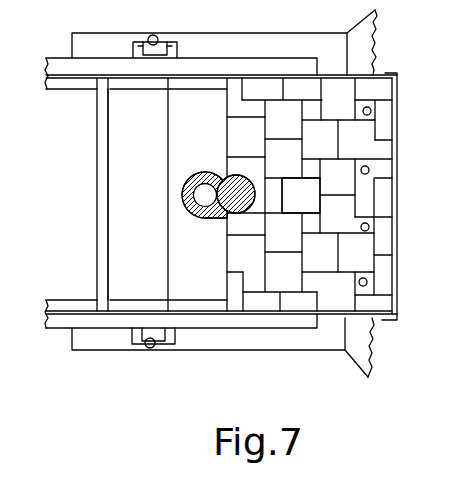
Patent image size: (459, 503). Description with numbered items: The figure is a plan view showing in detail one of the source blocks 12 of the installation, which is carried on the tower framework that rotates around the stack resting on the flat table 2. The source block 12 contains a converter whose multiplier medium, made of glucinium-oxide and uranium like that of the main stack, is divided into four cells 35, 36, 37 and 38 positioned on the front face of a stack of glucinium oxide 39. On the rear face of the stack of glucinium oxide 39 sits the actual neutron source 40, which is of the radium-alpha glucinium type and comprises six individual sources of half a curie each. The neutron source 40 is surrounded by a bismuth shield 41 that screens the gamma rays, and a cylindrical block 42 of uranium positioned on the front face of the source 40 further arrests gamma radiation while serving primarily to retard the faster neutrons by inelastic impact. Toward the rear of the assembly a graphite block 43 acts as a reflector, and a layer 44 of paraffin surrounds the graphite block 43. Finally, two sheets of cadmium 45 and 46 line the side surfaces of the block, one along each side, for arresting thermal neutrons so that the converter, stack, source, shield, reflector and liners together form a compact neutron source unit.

The flat table 2 is at (368, 44).
The source block 12 is at (95, 151).
The cell 35 is at (362, 108).
The cell 36 is at (361, 170).
The cell 37 is at (361, 226).
The cell 38 is at (362, 278).
The stack of glucinium oxide 39 is at (290, 202).
The neutron source 40 is at (205, 207).
The bismuth shield 41 is at (182, 189).
The cylindrical block of uranium 42 is at (227, 176).
The graphite block 43 is at (126, 225).
The layer of paraffin 44 is at (110, 120).
The sheet of cadmium 45 is at (205, 313).
The sheet of cadmium 46 is at (238, 72).